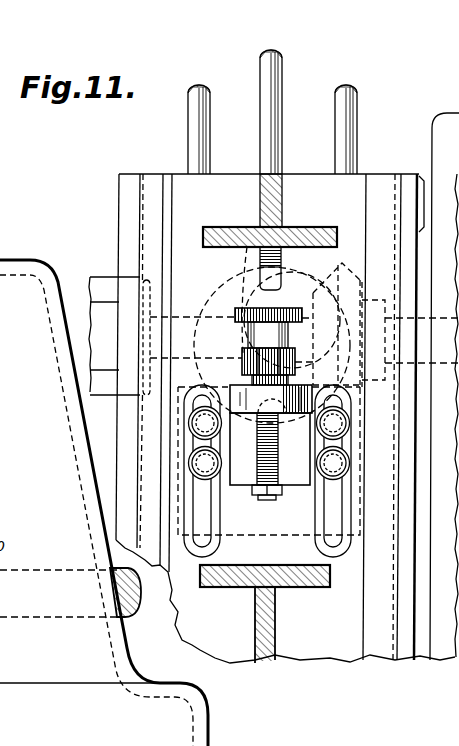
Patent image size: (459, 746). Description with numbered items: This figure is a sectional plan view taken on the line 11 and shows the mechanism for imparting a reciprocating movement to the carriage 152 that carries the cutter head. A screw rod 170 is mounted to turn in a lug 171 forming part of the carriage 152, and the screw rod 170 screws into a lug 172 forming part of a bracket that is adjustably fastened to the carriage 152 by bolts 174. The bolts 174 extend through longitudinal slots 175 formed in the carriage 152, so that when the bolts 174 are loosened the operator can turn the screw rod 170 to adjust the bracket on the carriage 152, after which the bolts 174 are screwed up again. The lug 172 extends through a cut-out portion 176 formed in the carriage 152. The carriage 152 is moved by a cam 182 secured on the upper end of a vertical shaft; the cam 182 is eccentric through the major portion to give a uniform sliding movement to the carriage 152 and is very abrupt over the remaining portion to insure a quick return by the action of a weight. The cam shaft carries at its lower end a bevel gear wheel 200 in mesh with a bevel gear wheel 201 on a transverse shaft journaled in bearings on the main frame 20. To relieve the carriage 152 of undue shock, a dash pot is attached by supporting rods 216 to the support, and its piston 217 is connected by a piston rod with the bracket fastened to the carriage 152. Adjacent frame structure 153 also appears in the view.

The section line 11 is at (3, 153).
The main frame 20 is at (440, 143).
The carriage 152 is at (310, 177).
The housing 153 is at (152, 231).
The screw rod 170 is at (283, 449).
The lug 171 is at (243, 355).
The lug 172 is at (237, 387).
The bolts 174 is at (196, 430).
The longitudinal slots 175 is at (208, 527).
The cut-out portion 176 is at (302, 478).
The cam 182 is at (230, 265).
The bevel gear wheel 200 is at (218, 294).
The bevel gear wheel 201 is at (358, 282).
The supporting rods 216 is at (188, 127).
The piston 217 is at (282, 78).